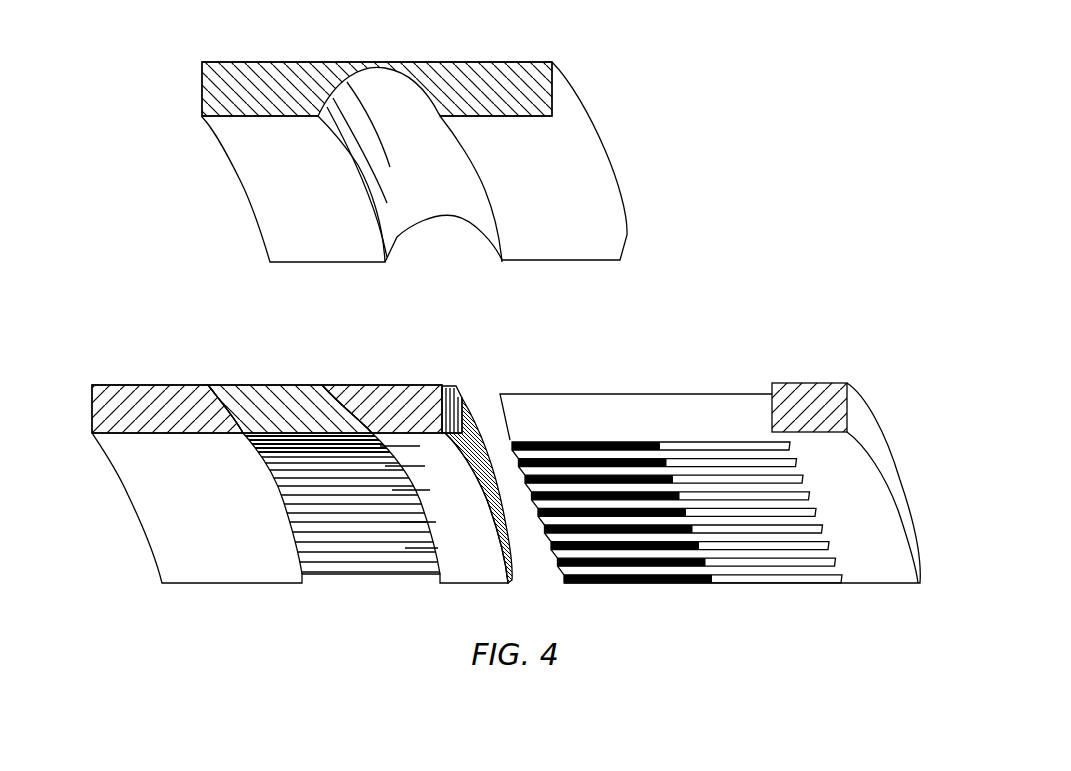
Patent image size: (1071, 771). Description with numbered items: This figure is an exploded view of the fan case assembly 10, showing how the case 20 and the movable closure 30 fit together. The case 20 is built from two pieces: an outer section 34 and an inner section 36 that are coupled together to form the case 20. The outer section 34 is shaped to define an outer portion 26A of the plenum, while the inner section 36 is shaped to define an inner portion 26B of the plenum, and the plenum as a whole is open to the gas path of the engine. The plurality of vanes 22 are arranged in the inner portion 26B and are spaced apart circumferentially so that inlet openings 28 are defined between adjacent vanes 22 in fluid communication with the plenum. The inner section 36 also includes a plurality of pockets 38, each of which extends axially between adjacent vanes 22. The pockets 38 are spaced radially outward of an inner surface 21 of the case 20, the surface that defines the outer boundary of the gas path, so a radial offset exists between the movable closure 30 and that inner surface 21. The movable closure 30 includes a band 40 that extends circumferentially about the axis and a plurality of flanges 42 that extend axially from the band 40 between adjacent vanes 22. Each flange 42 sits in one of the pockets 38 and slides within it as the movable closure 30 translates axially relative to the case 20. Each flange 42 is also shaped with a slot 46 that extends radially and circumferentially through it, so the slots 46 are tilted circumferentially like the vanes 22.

The fan case assembly 10 is at (840, 98).
The case 20 is at (87, 228).
The outer section 34 is at (227, 158).
The inner section 36 is at (145, 368).
The outer portion of the plenum 26A is at (377, 197).
The inner portion of the plenum 26B is at (232, 383).
The inner surface 21 is at (177, 490).
The inlet openings 28 is at (300, 507).
The vanes 22 is at (415, 518).
The pockets 38 is at (483, 413).
The movable closure 30 is at (782, 333).
The band 40 is at (812, 382).
The slots 46 is at (622, 520).
The flanges 42 is at (800, 515).